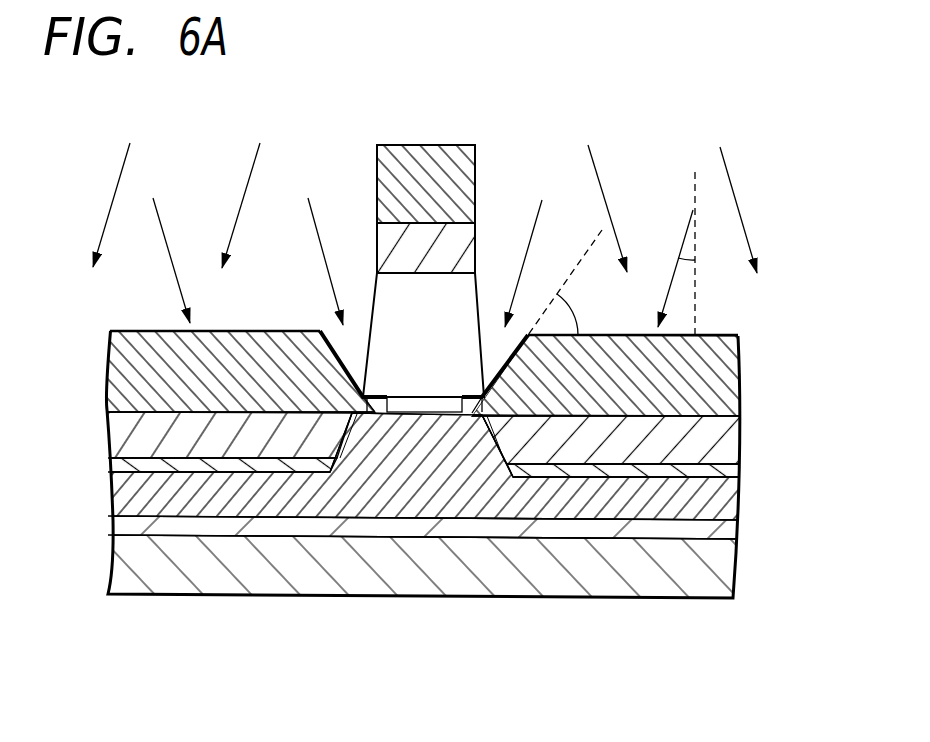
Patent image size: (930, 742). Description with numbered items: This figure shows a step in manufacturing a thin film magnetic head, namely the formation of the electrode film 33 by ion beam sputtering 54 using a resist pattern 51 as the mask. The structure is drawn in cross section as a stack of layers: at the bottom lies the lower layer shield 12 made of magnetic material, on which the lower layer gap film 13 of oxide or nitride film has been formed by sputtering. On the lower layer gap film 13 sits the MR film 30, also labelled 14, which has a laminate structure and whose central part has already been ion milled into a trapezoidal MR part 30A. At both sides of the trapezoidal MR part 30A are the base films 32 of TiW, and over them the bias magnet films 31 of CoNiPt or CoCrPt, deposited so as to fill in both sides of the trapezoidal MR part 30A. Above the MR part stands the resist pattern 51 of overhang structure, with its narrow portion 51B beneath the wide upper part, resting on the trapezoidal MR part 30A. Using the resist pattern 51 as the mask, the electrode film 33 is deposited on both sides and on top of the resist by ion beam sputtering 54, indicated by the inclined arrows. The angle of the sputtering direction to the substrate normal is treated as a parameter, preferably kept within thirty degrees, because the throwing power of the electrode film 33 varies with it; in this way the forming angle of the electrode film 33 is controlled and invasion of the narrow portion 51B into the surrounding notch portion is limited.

The lower layer shield 12 is at (722, 568).
The lower layer gap film 13 is at (722, 529).
The MR film 14 is at (728, 495).
The MR film 30 is at (485, 466).
The trapezoidal MR part 30A is at (430, 442).
The bias magnet film 31 is at (120, 428).
The base film 32 is at (122, 465).
The electrode film 33 is at (120, 373).
The resist pattern 51 is at (363, 347).
The narrow portion 51B is at (420, 407).
The ion beam sputtering 54 is at (240, 207).